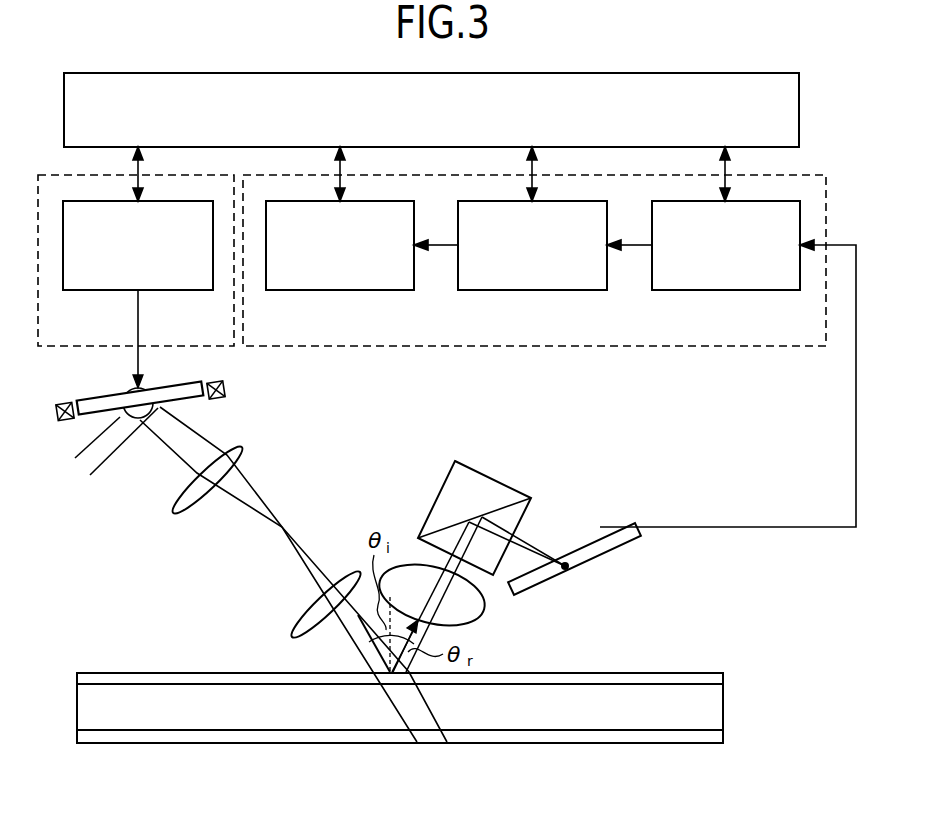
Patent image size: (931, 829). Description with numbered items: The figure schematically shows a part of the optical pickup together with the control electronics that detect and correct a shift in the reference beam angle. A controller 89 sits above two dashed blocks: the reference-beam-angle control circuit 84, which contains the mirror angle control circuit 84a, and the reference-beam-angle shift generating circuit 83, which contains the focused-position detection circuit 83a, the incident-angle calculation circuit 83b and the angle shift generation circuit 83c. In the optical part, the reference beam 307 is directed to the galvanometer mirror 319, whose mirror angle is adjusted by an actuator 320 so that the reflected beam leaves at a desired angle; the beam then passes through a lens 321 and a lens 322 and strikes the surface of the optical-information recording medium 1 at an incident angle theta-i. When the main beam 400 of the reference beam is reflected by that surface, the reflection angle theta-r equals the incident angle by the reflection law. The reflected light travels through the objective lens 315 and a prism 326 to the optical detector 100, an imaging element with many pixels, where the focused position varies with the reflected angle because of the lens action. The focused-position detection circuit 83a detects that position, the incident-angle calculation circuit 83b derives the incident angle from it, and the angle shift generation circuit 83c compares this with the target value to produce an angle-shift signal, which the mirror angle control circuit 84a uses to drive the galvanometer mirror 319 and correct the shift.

The controller 89 is at (799, 112).
The reference-beam-angle control circuit 84 is at (52, 172).
The mirror angle control circuit 84a is at (103, 291).
The reference-beam-angle shift generating circuit 83 is at (632, 349).
The focused-position detection circuit 83a is at (725, 291).
The incident-angle calculation circuit 83b is at (533, 291).
The angle shift generation circuit 83c is at (341, 291).
The galvanometer mirror 319 is at (163, 401).
The actuator 320 is at (228, 383).
The lens 321 is at (183, 503).
The reference beam 307 is at (300, 557).
The lens 322 is at (303, 625).
The prism 326 is at (455, 490).
The objective lens 315 is at (467, 610).
The optical detector 100 is at (557, 617).
The optical-information recording medium 1 is at (712, 708).
The main beam 400 is at (370, 634).